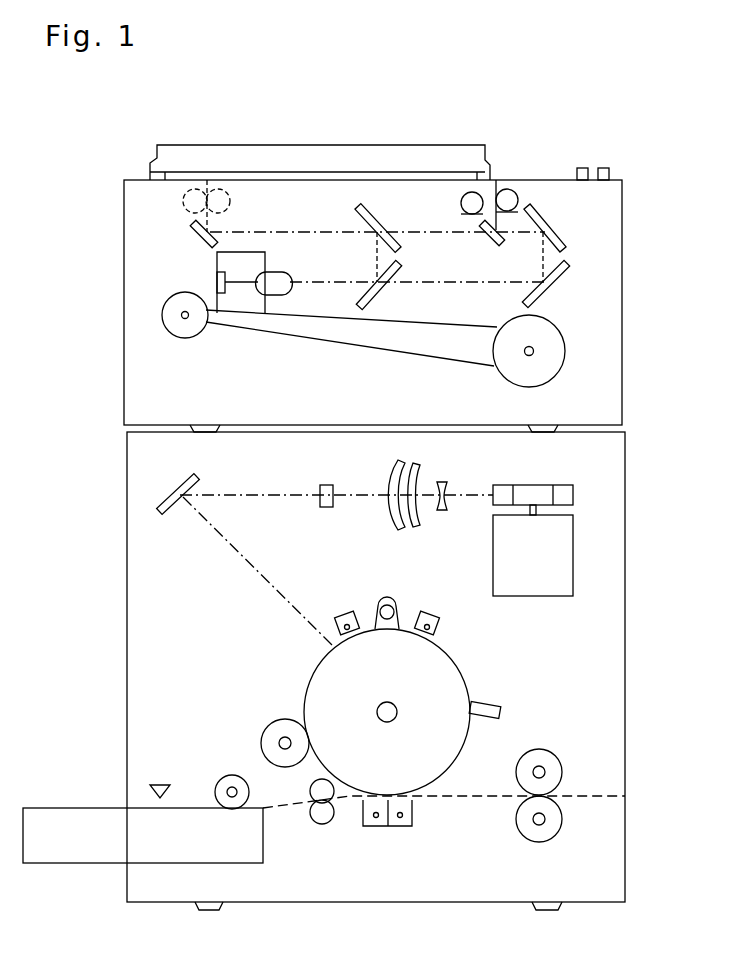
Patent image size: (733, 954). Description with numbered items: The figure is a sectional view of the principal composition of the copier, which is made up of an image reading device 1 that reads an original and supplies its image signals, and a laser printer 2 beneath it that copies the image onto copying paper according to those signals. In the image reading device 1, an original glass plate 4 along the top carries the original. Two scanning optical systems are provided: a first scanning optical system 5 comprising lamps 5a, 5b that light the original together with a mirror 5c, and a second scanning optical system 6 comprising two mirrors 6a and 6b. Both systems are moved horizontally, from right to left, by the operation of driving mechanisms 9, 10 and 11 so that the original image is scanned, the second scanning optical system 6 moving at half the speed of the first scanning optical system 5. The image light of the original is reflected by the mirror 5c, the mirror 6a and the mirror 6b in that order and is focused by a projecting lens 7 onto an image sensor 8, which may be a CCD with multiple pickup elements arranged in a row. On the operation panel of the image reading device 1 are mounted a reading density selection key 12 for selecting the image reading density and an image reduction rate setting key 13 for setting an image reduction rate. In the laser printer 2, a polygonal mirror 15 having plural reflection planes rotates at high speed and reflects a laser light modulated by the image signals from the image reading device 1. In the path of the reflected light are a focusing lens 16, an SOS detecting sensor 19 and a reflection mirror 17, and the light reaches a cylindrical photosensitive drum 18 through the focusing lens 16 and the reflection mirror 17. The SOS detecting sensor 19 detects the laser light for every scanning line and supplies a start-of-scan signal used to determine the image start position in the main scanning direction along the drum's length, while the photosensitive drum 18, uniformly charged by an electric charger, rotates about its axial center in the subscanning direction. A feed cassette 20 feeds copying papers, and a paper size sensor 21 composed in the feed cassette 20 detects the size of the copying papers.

The image reading device 1 is at (124, 300).
The laser printer 2 is at (127, 645).
The original glass plate 4 is at (283, 172).
The first scanning optical system 5 is at (489, 171).
The lamp 5a is at (462, 202).
The lamp 5b is at (512, 196).
The mirror 5c is at (482, 242).
The second scanning optical system 6 is at (602, 256).
The mirror 6a is at (563, 240).
The mirror 6b is at (545, 295).
The projecting lens 7 is at (278, 278).
The image sensor 8 is at (217, 280).
The driving mechanism 9 is at (565, 365).
The driving mechanism 10 is at (318, 345).
The driving mechanism 11 is at (195, 332).
The reading density selection key 12 is at (584, 168).
The image reduction rate setting key 13 is at (609, 170).
The polygonal mirror 15 is at (563, 497).
The focusing lens 16 is at (428, 477).
The reflection mirror 17 is at (178, 483).
The photosensitive drum 18 is at (458, 687).
The SOS detecting sensor 19 is at (322, 508).
The feed cassette 20 is at (70, 865).
The paper size sensor 21 is at (160, 783).